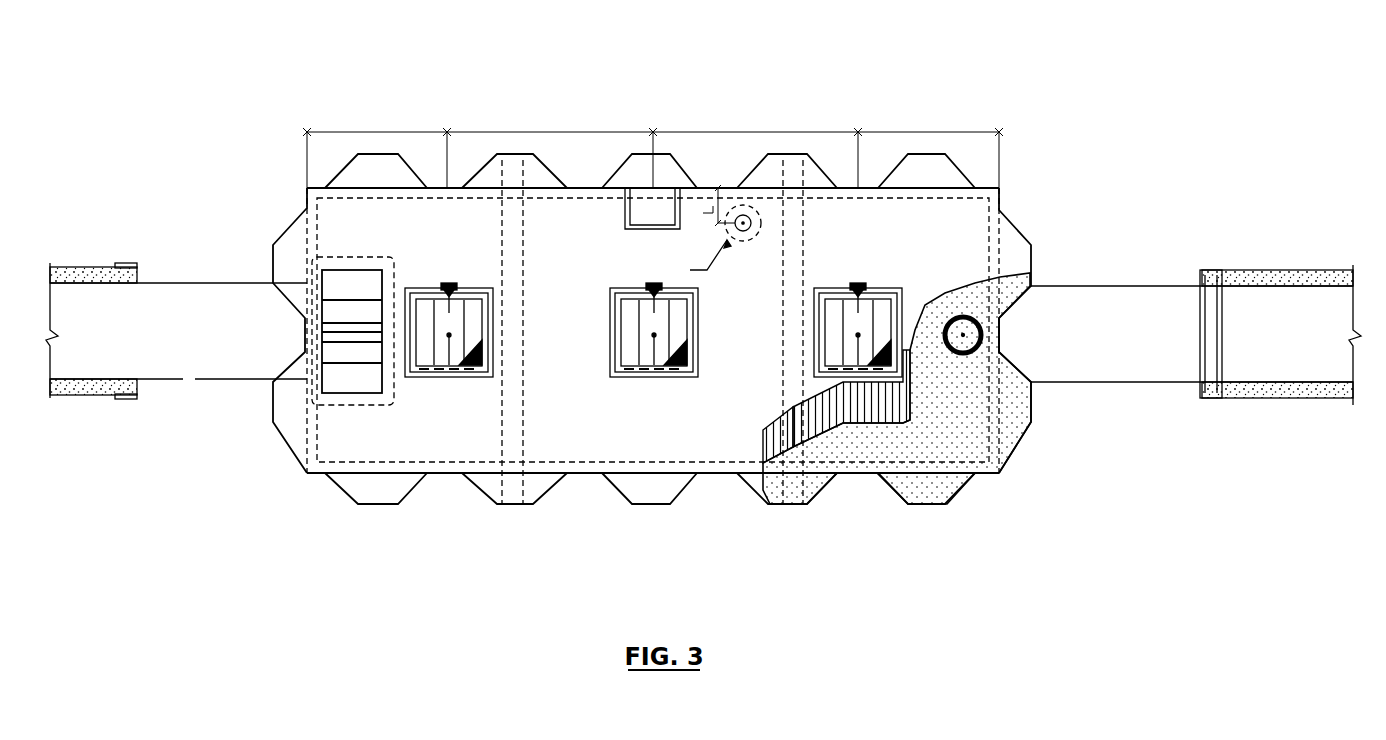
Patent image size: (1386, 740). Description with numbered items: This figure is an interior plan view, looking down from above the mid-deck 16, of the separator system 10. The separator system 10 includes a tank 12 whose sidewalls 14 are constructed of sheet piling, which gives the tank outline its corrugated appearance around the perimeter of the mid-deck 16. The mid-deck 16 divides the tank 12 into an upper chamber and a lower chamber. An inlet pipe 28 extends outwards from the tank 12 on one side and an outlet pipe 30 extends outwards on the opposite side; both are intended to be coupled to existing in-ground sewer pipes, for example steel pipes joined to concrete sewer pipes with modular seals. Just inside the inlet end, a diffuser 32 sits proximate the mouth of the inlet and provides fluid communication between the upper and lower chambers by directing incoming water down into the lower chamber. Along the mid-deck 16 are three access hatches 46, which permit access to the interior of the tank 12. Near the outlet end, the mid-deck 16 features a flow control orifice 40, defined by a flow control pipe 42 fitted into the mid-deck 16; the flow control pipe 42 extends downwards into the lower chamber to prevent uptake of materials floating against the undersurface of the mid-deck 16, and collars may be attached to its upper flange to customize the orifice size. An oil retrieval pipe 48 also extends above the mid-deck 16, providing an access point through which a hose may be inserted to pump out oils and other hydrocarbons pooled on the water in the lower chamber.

The separator system 10 is at (172, 103).
The tank 12 is at (1044, 206).
The sidewalls 14 is at (960, 170).
The mid-deck 16 is at (618, 441).
The inlet pipe 28 is at (188, 367).
The outlet pipe 30 is at (1103, 372).
The diffuser 32 is at (386, 396).
The flow control orifice 40 is at (933, 309).
The flow control pipe 42 is at (964, 316).
The access hatches 46 is at (457, 305).
The oil retrieval pipe 48 is at (743, 241).